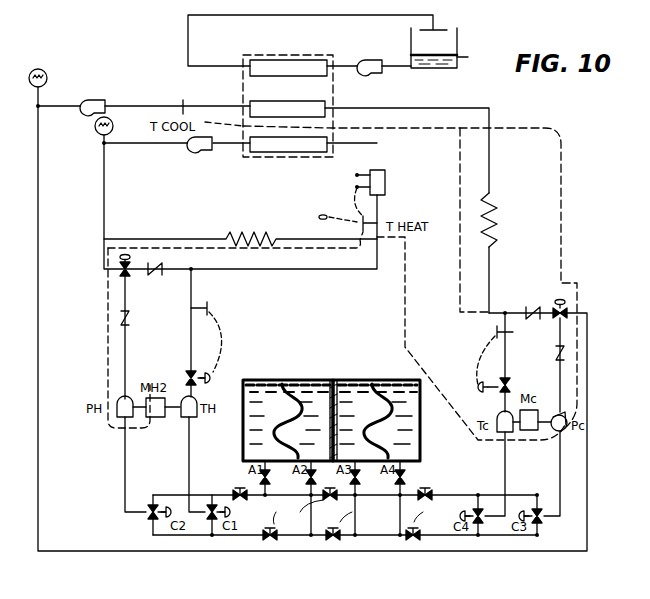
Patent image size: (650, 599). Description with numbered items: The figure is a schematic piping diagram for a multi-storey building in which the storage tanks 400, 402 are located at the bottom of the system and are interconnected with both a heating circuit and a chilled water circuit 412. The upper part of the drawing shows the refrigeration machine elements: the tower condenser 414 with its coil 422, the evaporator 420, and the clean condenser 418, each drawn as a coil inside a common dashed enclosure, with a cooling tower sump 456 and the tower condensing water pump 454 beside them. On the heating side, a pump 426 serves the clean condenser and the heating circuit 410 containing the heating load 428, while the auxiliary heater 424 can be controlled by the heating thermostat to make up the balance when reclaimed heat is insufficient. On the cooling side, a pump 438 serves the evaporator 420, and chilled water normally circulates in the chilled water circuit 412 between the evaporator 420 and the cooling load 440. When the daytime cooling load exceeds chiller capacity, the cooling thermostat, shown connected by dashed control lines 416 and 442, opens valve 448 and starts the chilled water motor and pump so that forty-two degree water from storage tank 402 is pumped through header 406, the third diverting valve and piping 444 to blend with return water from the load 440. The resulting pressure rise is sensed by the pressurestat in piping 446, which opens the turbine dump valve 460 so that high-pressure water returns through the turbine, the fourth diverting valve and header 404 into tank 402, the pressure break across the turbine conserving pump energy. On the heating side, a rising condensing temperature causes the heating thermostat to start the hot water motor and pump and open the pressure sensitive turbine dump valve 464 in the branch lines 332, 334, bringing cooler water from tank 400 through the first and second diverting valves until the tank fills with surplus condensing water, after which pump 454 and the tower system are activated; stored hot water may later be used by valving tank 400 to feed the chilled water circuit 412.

The storage tank 400 is at (312, 379).
The storage tank 402 is at (392, 379).
The header 404 is at (462, 492).
The header 406 is at (445, 538).
The heating circuit 410 is at (215, 203).
The chilled water circuit 412 is at (492, 111).
The tower condenser 414 is at (186, 40).
The temperature control connection 416 is at (334, 136).
The clean condenser 418 is at (310, 170).
The evaporator 420 is at (252, 106).
The tower condenser coil 422 is at (290, 68).
The auxiliary heater 424 is at (384, 170).
The clean condenser pump 426 is at (190, 148).
The heating load 428 is at (226, 234).
The heating control branch line 332 is at (187, 348).
The heating pressure branch line 334 is at (122, 343).
The evaporator pump 438 is at (110, 98).
The cooling load 440 is at (506, 214).
The control connection 442 is at (442, 292).
The piping 444 is at (558, 376).
The piping 446 is at (507, 376).
The valve 448 is at (568, 313).
The pump 454 is at (380, 48).
The cooling tower sump 456 is at (458, 63).
The turbine dump valve 460 is at (476, 387).
The pressure sensitive turbine dump valve 464 is at (212, 378).